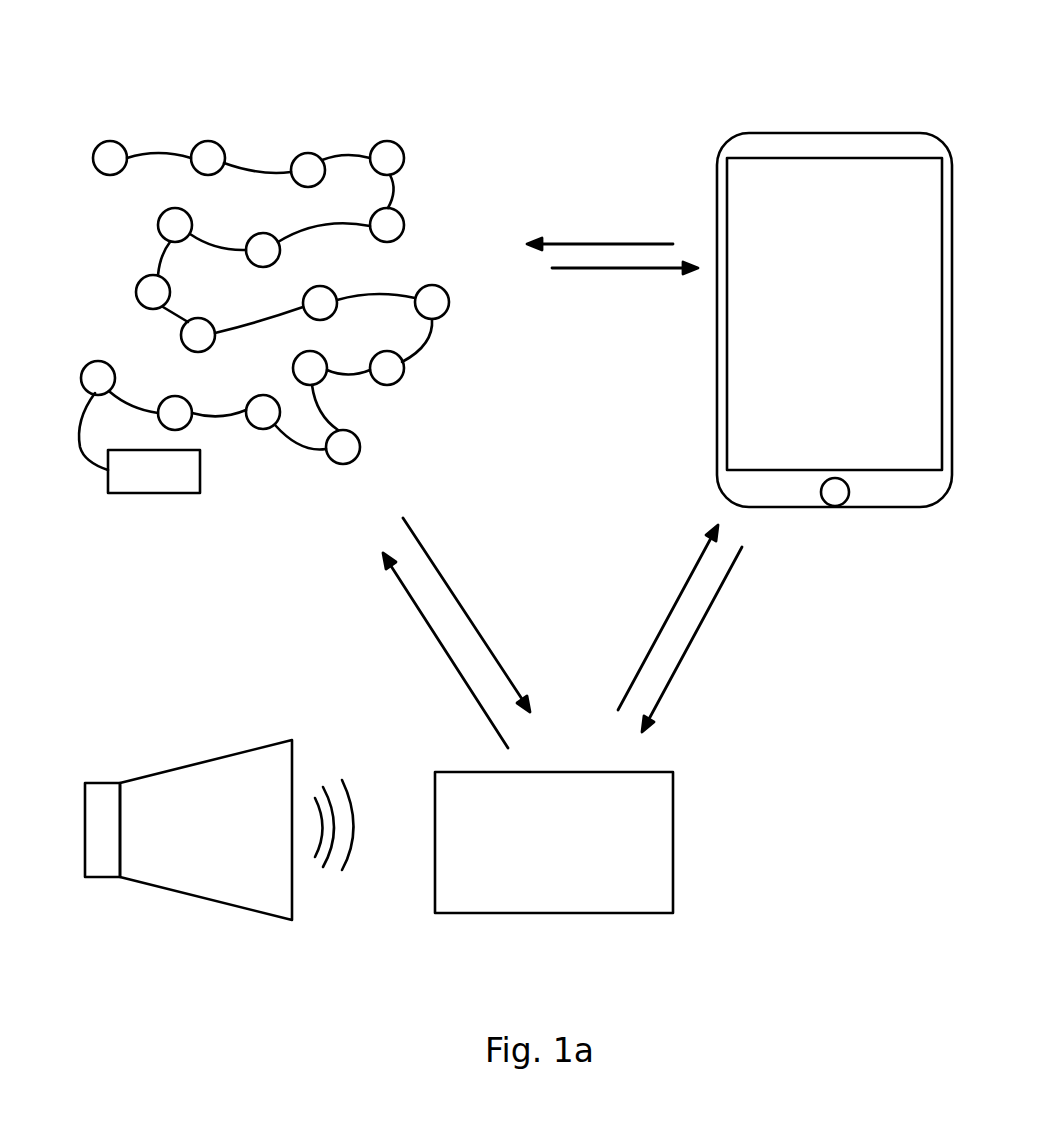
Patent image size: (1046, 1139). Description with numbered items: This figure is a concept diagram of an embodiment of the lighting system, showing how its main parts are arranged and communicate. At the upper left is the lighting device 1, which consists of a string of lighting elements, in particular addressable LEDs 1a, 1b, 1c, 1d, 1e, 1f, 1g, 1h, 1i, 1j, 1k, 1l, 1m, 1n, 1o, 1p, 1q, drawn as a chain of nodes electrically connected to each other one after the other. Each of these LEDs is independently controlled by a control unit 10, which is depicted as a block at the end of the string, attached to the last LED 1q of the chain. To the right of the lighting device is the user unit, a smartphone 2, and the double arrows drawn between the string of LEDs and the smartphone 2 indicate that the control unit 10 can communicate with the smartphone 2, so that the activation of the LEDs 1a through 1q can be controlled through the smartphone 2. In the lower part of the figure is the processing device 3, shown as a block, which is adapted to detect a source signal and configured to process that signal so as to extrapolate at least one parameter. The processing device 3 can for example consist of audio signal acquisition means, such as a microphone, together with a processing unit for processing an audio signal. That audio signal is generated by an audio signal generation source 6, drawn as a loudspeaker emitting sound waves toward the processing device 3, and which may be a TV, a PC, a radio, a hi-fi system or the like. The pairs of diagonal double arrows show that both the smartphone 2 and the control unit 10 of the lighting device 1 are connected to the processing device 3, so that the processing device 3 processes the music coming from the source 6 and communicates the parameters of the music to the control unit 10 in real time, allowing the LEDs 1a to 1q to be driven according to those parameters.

The lighting device 1 is at (338, 78).
The addressable LED 1a is at (110, 141).
The addressable LED 1b is at (216, 143).
The addressable LED 1c is at (318, 156).
The addressable LED 1d is at (404, 163).
The addressable LED 1e is at (404, 224).
The addressable LED 1f is at (272, 264).
The addressable LED 1g is at (186, 212).
The addressable LED 1h is at (137, 288).
The addressable LED 1i is at (197, 318).
The addressable LED 1j is at (321, 320).
The addressable LED 1k is at (449, 302).
The addressable LED 1l is at (398, 382).
The addressable LED 1m is at (293, 368).
The addressable LED 1n is at (357, 457).
The addressable LED 1o is at (262, 429).
The addressable LED 1p is at (184, 398).
The addressable LED 1q is at (98, 361).
The smartphone 2 is at (808, 133).
The processing device 3 is at (673, 823).
The audio signal generation source 6 is at (223, 902).
The control unit 10 is at (157, 493).